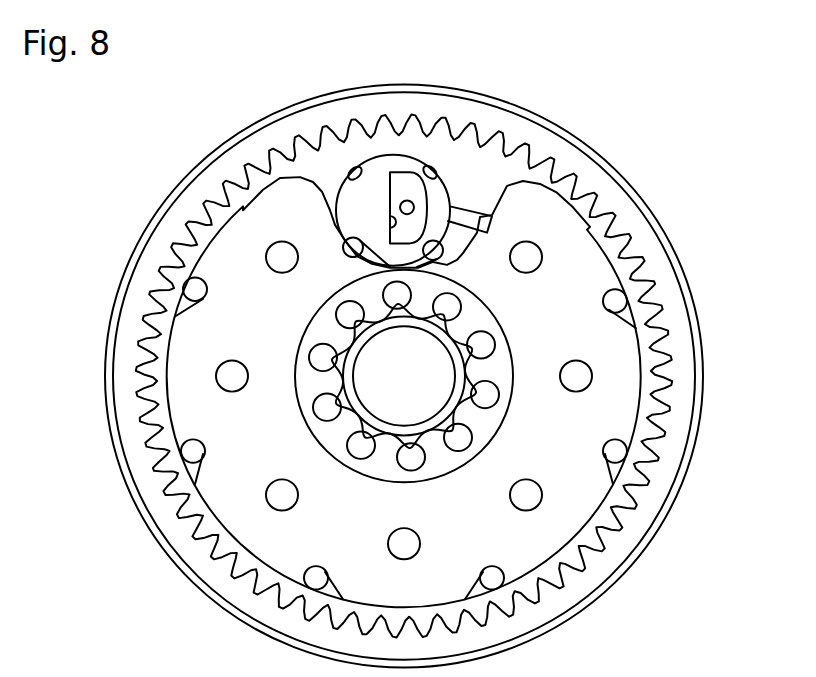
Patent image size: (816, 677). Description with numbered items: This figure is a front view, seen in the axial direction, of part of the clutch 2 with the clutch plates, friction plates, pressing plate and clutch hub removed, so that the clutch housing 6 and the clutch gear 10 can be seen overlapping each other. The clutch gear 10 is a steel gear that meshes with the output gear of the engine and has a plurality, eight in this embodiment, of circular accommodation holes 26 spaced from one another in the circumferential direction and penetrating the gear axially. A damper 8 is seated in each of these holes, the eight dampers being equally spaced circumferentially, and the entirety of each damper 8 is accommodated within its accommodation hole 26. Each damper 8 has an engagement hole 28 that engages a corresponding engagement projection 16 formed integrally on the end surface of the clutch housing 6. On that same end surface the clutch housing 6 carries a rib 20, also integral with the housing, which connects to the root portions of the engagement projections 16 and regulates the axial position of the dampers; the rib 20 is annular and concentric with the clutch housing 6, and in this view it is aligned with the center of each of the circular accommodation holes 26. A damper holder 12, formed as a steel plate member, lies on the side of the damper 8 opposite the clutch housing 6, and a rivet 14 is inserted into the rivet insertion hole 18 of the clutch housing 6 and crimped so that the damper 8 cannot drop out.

The clutch 2 is at (681, 133).
The clutch housing 6 is at (645, 242).
The damper 8 is at (392, 165).
The clutch gear 10 is at (657, 333).
The damper holder 12 is at (578, 490).
The rivet 14 is at (578, 382).
The engagement projection 16 is at (405, 185).
The rivet insertion hole 18 is at (408, 207).
The rib 20 is at (480, 213).
The accommodation hole 26 is at (353, 176).
The engagement hole 28 is at (390, 230).